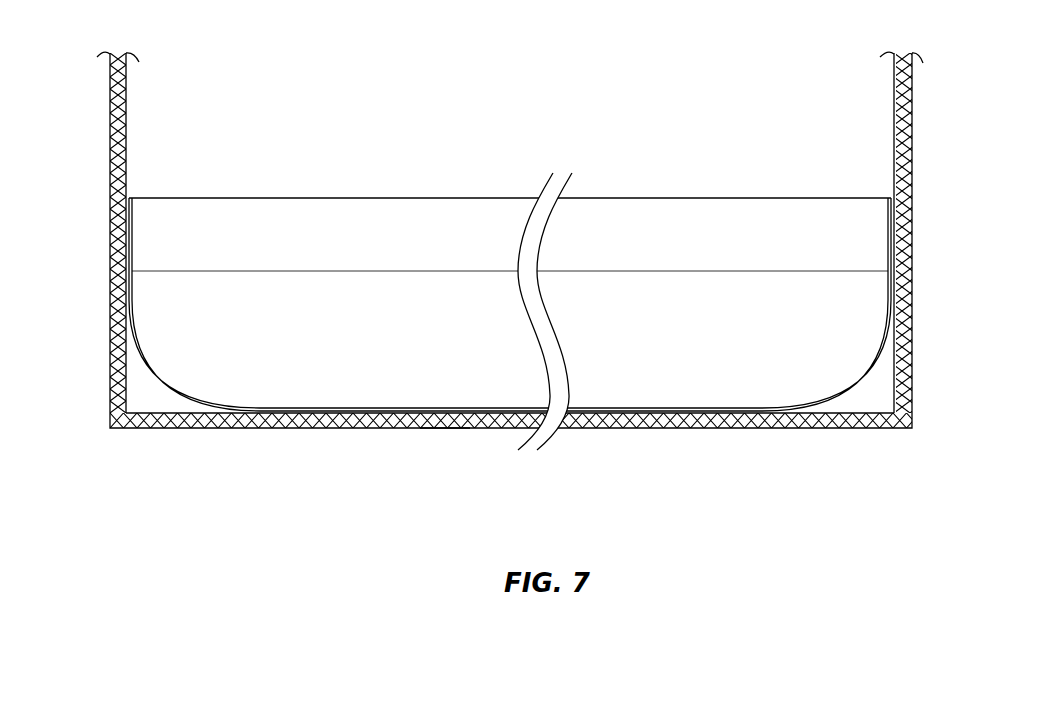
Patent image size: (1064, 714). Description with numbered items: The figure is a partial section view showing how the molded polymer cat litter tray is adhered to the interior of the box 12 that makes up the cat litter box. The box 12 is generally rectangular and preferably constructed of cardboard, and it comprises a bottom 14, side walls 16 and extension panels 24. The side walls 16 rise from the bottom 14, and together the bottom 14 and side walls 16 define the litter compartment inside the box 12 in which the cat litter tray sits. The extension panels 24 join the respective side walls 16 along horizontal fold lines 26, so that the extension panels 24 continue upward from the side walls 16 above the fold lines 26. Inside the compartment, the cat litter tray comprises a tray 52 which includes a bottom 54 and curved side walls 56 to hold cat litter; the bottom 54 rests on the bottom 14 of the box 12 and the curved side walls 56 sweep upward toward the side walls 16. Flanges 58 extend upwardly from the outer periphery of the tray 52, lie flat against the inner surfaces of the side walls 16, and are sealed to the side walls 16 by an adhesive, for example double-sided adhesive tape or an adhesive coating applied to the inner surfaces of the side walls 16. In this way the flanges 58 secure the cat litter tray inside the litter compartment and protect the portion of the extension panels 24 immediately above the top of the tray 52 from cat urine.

The box 12 is at (959, 311).
The bottom 14 is at (318, 431).
The side walls 16 is at (110, 310).
The extension panels 24 is at (110, 113).
The horizontal fold lines 26 is at (110, 188).
The tray 52 is at (444, 415).
The bottom 54 is at (648, 410).
The curved side walls 56 is at (168, 374).
The flanges 58 is at (134, 233).